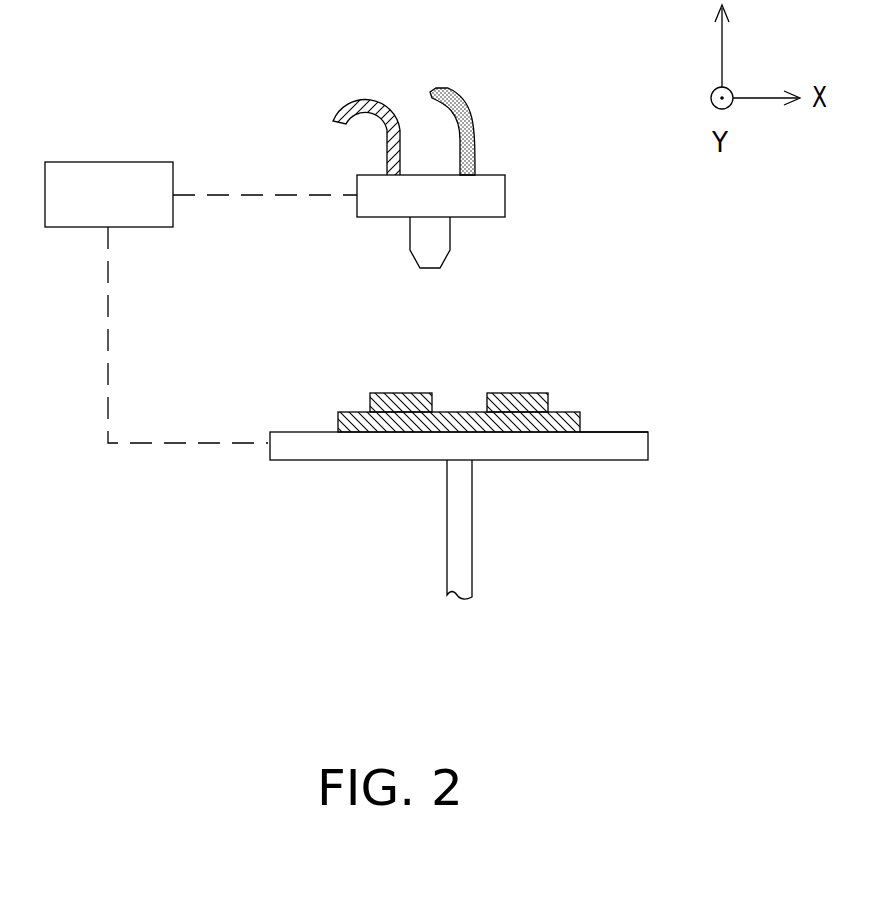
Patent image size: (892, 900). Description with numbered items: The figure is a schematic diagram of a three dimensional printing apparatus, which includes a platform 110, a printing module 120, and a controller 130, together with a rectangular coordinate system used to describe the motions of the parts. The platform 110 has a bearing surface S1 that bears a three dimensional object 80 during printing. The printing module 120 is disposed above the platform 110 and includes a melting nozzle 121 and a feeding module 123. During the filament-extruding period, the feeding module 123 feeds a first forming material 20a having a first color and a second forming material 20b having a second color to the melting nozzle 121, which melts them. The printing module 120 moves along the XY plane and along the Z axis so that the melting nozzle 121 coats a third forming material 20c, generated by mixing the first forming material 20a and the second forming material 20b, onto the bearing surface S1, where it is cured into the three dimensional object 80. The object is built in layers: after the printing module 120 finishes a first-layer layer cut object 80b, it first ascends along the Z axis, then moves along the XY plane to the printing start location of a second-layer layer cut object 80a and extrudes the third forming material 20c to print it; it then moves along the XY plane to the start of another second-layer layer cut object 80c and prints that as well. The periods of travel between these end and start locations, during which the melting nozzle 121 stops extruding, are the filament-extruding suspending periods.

The controller 130 is at (110, 162).
The printing module 120 is at (517, 215).
The feeding module 123 is at (505, 200).
The melting nozzle 121 is at (450, 238).
The second forming material 20b is at (363, 95).
The first forming material 20a is at (453, 85).
The third forming material 20c is at (533, 392).
The three dimensional object 80 is at (452, 374).
The second-layer layer cut object 80a is at (402, 393).
The first-layer layer cut object 80b is at (338, 423).
The second-layer layer cut object 80c is at (525, 364).
The platform 110 is at (648, 447).
The bearing surface S1 is at (620, 428).